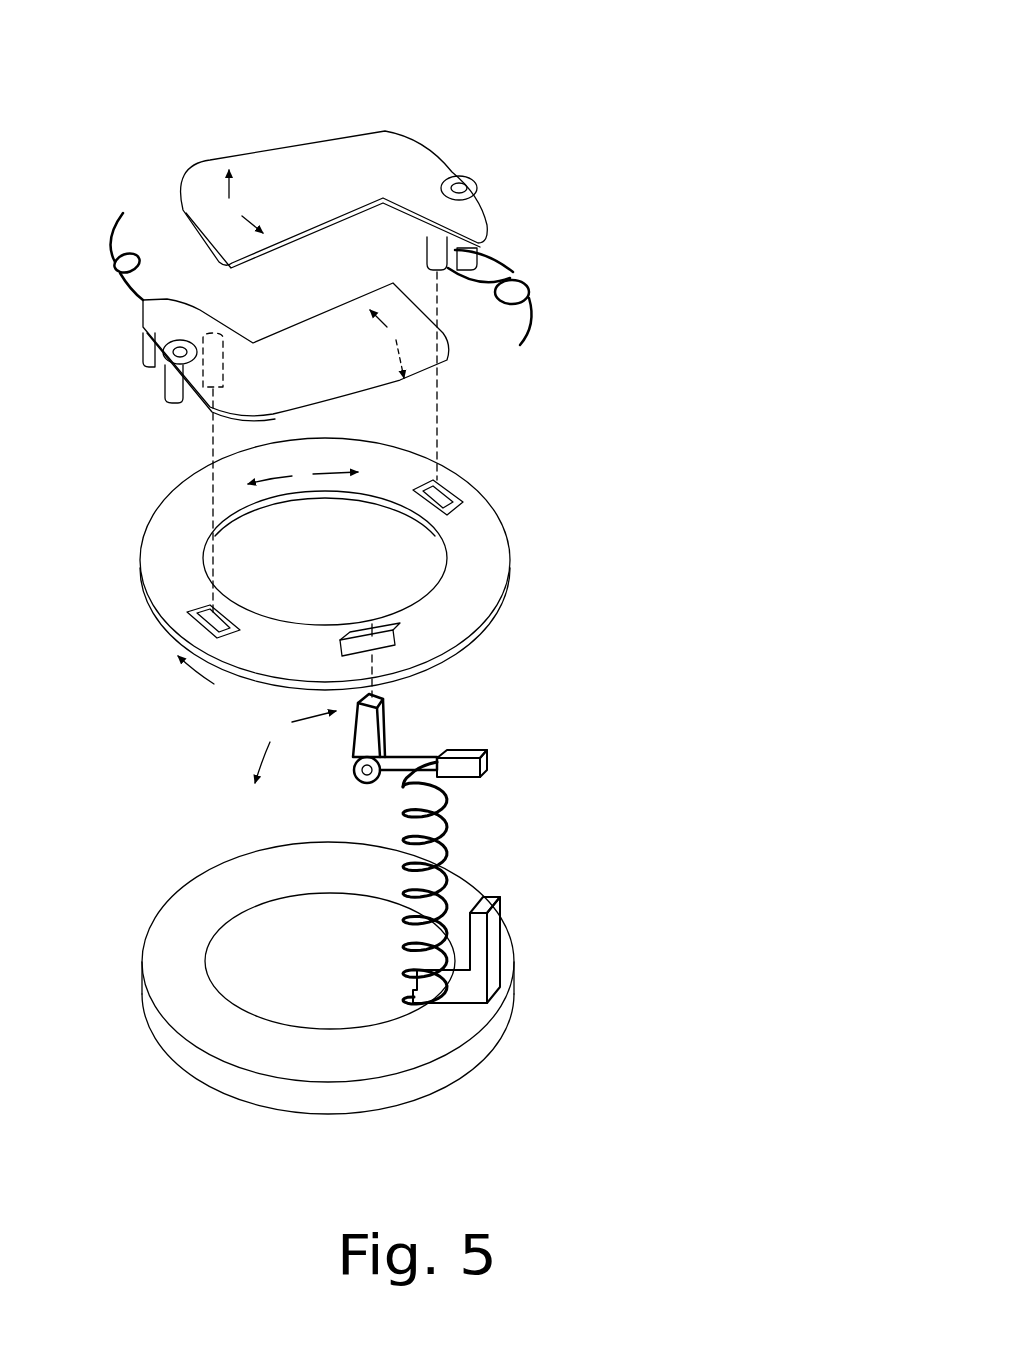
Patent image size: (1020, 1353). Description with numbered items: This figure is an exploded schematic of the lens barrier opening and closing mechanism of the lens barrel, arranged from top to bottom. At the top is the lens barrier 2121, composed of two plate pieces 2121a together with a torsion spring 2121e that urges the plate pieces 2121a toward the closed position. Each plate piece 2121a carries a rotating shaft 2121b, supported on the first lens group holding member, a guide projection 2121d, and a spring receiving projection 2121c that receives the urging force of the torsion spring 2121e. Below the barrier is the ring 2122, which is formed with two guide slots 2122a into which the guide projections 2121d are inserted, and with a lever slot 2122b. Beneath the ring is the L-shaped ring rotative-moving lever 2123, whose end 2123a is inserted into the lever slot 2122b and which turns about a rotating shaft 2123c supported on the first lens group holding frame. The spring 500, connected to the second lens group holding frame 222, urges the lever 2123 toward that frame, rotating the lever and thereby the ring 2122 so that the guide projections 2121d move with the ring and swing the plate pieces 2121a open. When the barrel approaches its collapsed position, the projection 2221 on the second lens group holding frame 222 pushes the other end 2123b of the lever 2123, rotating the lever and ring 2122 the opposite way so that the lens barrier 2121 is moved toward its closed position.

The lens barrier 2121 is at (668, 20).
The plate piece 2121a is at (305, 163).
The rotating shaft 2121b is at (461, 176).
The spring receiving projection 2121c is at (485, 265).
The guide projection 2121d is at (507, 253).
The torsion spring 2121e is at (553, 310).
The ring 2122 is at (490, 557).
The guide slot 2122a is at (223, 620).
The lever slot 2122b is at (378, 625).
The ring rotative-moving lever 2123 is at (652, 643).
The end of ring rotative-moving lever 2123a is at (390, 720).
The other end of ring rotative-moving lever 2123b is at (490, 753).
The rotating shaft 2123c is at (400, 755).
The spring 500 is at (453, 827).
The second lens group holding frame 222 is at (497, 1030).
The projection 2221 is at (497, 918).